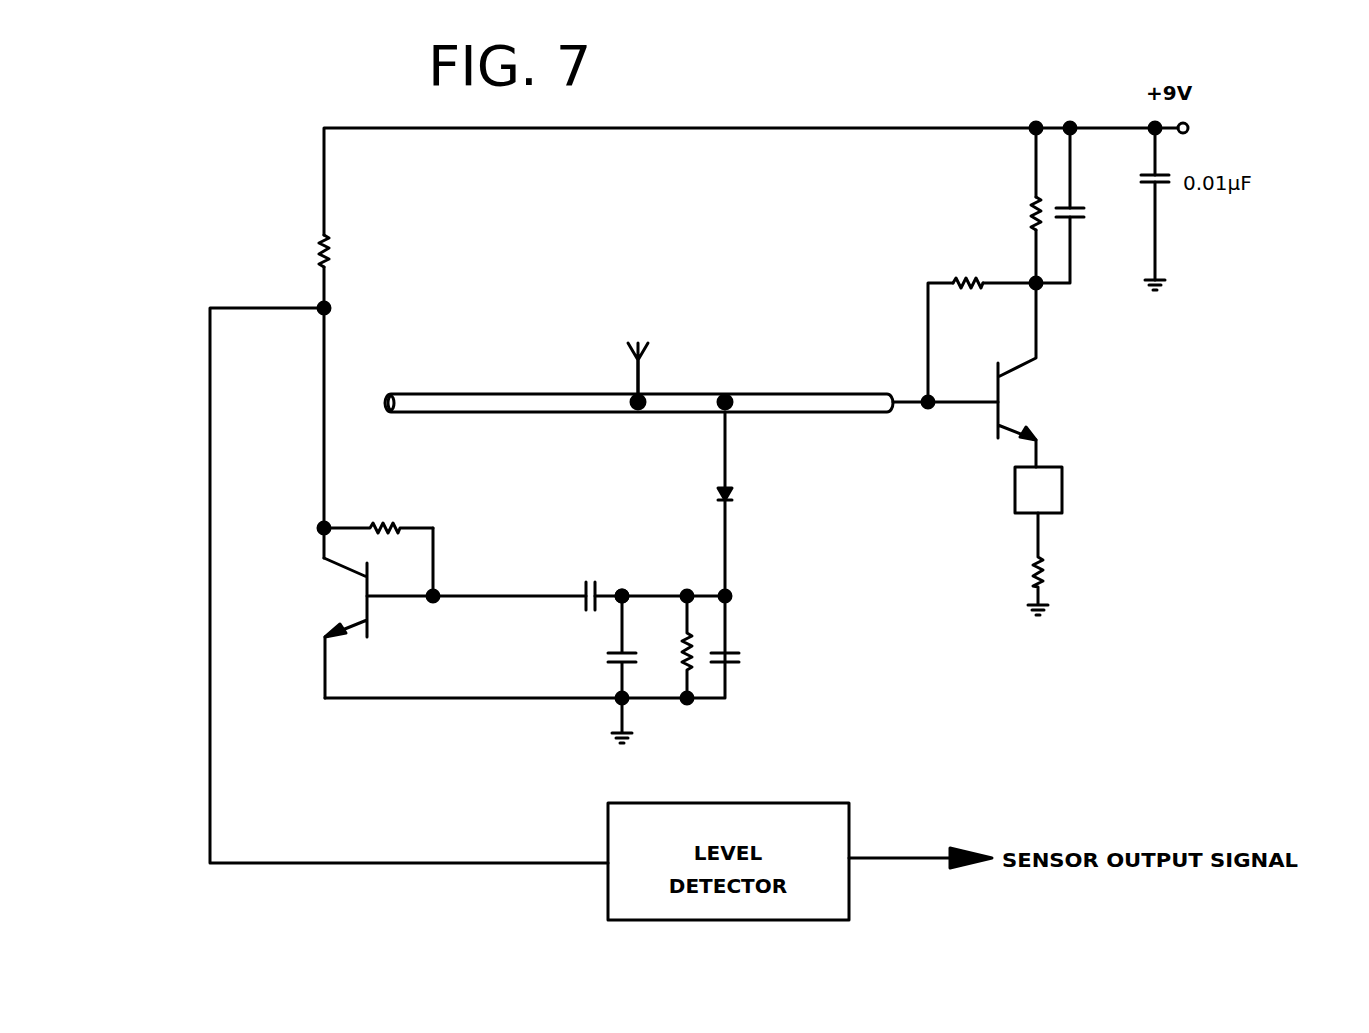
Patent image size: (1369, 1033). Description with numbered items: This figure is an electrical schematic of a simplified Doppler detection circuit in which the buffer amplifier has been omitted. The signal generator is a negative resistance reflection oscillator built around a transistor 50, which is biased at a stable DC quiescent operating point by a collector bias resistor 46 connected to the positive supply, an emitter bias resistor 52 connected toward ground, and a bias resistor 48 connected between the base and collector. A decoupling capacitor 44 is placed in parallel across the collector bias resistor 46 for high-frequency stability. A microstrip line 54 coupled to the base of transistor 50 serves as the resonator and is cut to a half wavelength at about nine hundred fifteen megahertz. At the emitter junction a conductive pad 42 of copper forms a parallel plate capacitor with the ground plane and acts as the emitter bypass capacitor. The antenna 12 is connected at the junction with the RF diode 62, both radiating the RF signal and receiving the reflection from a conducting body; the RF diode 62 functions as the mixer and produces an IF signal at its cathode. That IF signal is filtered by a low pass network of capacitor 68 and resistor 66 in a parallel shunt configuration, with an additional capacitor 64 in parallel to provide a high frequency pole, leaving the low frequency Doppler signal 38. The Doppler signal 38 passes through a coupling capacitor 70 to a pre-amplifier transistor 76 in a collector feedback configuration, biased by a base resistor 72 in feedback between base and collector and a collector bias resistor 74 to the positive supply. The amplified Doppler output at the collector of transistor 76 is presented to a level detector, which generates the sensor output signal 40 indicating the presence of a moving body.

The collector bias resistor 74 is at (324, 250).
The microstrip line 54 is at (530, 393).
The antenna 12 is at (637, 360).
The collector bias resistor 46 is at (1034, 218).
The bias resistor 48 is at (966, 281).
The decoupling capacitor 44 is at (1076, 222).
The transistor 50 is at (996, 432).
The conductive pad 42 is at (1062, 488).
The emitter bias resistor 52 is at (1036, 570).
The base resistor 72 is at (385, 524).
The transistor 76 is at (344, 572).
The RF diode 62 is at (723, 495).
The Doppler signal 38 is at (625, 594).
The coupling capacitor 70 is at (584, 606).
The capacitor 68 is at (611, 664).
The resistor 66 is at (690, 672).
The capacitor 64 is at (735, 655).
The sensor output signal 40 is at (895, 858).